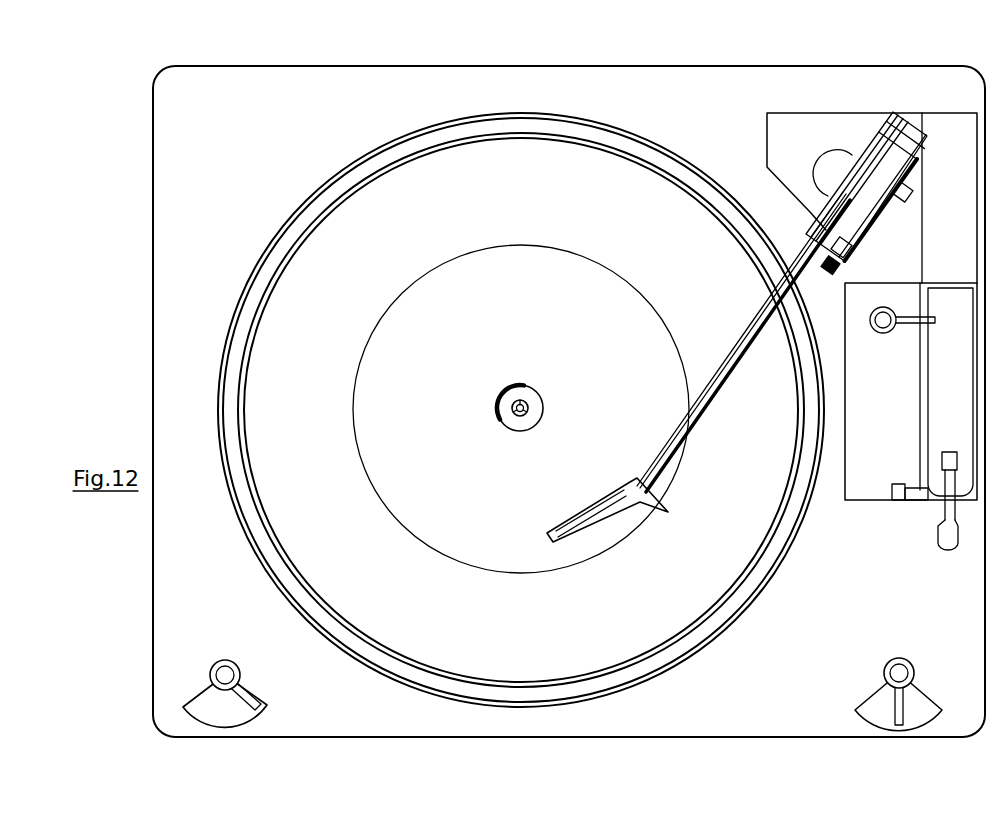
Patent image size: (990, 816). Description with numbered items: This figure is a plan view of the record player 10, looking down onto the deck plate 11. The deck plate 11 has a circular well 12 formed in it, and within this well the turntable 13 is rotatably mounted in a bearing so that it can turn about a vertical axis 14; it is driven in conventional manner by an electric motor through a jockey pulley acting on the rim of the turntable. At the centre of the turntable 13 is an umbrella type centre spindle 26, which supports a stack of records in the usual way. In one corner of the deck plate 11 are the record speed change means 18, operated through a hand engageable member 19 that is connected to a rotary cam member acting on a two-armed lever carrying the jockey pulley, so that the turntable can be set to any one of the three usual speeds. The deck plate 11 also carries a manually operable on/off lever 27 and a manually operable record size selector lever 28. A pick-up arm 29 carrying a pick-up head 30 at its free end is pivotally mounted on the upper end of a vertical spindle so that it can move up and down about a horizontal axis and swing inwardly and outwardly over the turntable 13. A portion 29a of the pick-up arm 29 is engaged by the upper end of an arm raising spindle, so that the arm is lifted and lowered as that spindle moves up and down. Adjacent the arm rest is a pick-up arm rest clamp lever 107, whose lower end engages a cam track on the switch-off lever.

The record player 10 is at (323, 67).
The deck plate 11 is at (158, 208).
The circular well 12 is at (250, 282).
The turntable 13 is at (255, 410).
The vertical axis 14 is at (516, 414).
The record speed change means 18 is at (210, 660).
The hand engageable member 19 is at (258, 700).
The umbrella type centre spindle 26 is at (532, 404).
The on/off lever 27 is at (914, 696).
The record size selector lever 28 is at (886, 306).
The pick-up arm 29 is at (712, 394).
The portion of the pick-up arm 29a is at (848, 165).
The pick-up head 30 is at (618, 505).
The pick-up arm rest clamp lever 107 is at (920, 487).